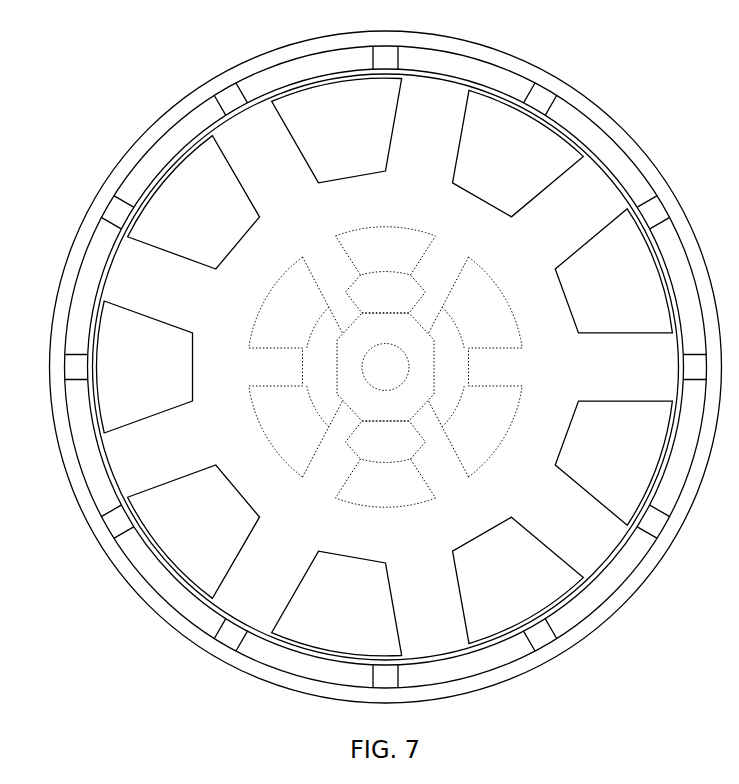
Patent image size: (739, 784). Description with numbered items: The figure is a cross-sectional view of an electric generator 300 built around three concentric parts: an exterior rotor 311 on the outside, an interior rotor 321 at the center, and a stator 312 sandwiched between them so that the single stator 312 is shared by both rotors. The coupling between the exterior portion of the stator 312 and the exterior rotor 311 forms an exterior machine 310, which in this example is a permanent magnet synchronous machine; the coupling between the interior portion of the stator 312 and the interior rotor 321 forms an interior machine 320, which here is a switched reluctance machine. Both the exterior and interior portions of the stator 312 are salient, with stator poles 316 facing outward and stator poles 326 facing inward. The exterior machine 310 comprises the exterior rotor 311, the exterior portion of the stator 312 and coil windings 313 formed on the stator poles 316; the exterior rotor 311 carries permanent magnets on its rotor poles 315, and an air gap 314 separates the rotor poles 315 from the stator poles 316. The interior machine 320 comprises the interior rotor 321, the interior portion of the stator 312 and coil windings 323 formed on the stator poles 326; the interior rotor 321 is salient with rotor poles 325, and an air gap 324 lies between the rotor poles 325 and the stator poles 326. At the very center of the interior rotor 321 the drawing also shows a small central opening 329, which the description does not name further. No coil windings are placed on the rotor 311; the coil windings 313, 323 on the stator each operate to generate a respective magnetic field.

The electric generator 300 is at (371, 360).
The exterior machine 310 is at (371, 360).
The exterior rotor 311 is at (121, 56).
The stator 312 is at (385, 364).
The coil windings 313 is at (527, 560).
The air gap 314 is at (138, 532).
The rotor poles 315 is at (110, 507).
The stator poles 316 is at (293, 587).
The interior machine 320 is at (472, 217).
The interior rotor 321 is at (342, 325).
The coil windings 323 is at (413, 483).
The air gap 324 is at (433, 433).
The rotor poles 325 is at (320, 412).
The stator poles 326 is at (348, 443).
The shaft bore 329 is at (385, 355).